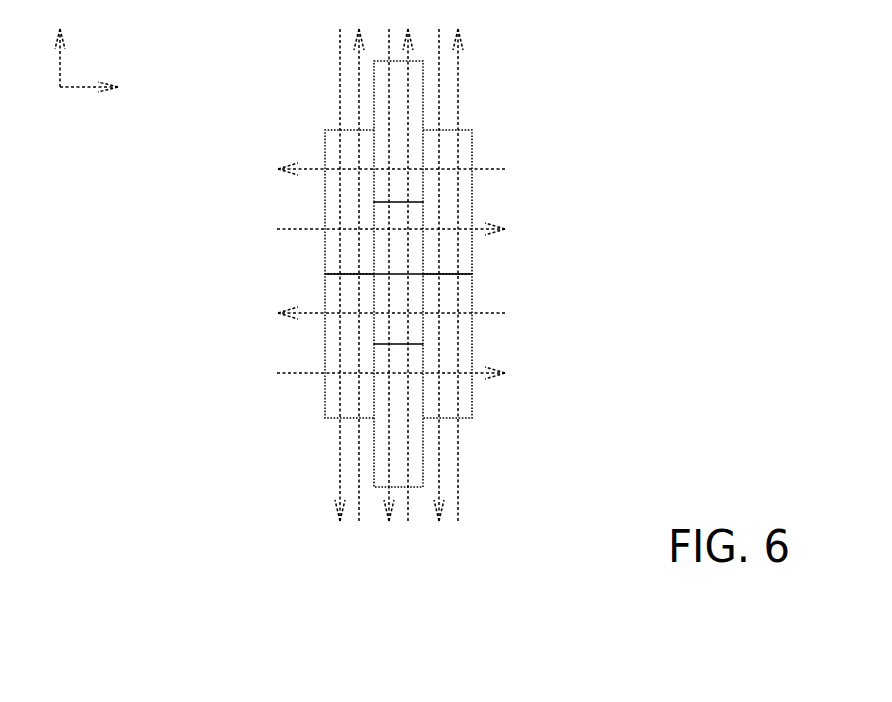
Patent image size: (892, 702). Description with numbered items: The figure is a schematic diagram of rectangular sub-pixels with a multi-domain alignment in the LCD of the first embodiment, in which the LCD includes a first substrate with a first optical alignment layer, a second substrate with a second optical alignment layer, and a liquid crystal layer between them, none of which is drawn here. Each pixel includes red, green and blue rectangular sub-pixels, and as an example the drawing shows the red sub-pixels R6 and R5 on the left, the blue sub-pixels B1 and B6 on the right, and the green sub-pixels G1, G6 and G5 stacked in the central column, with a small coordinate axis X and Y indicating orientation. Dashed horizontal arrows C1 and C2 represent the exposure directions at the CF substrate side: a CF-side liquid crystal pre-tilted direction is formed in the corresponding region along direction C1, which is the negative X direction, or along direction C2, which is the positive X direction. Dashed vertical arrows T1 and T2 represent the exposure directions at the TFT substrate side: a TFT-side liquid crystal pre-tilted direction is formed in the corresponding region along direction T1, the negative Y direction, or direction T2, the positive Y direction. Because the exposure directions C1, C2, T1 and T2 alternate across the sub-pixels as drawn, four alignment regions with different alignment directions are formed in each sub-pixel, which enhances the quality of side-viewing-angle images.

The green sub-pixel G1 is at (398, 131).
The green sub-pixel G6 is at (398, 273).
The green sub-pixel G5 is at (398, 415).
The red sub-pixel R6 is at (349, 202).
The red sub-pixel R5 is at (349, 346).
The blue sub-pixel B1 is at (447, 202).
The blue sub-pixel B6 is at (447, 346).
The exposure direction at the TFT substrate side T1 is at (392, 293).
The exposure direction at the TFT substrate side T2 is at (408, 260).
The exposure direction at the CF substrate side C1 is at (371, 242).
The exposure direction at the CF substrate side C2 is at (413, 302).
The X direction X is at (100, 88).
The Y direction Y is at (59, 351).